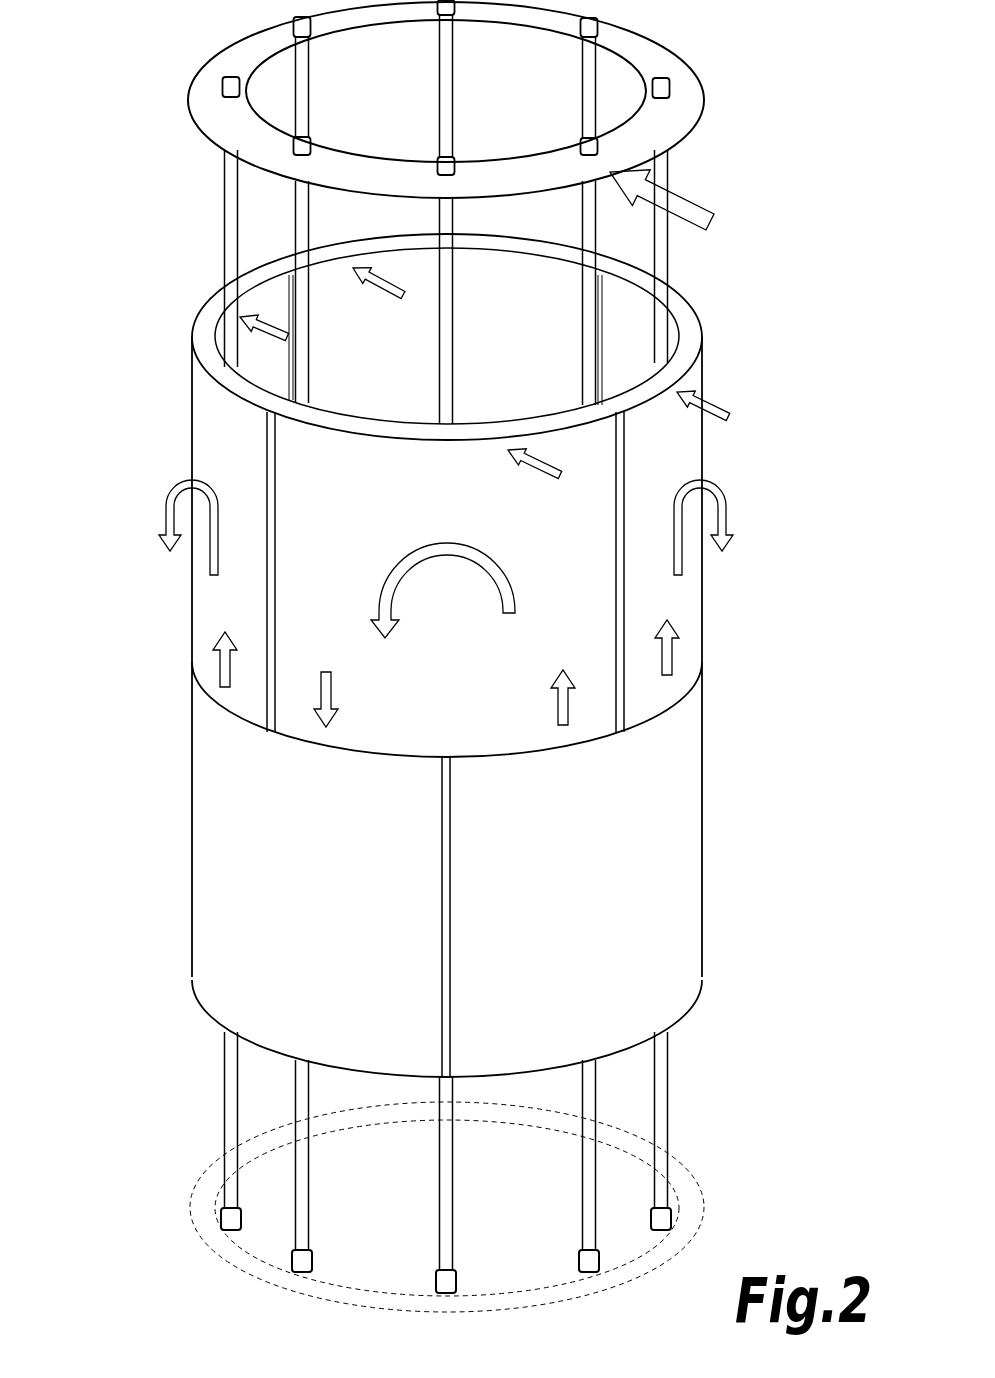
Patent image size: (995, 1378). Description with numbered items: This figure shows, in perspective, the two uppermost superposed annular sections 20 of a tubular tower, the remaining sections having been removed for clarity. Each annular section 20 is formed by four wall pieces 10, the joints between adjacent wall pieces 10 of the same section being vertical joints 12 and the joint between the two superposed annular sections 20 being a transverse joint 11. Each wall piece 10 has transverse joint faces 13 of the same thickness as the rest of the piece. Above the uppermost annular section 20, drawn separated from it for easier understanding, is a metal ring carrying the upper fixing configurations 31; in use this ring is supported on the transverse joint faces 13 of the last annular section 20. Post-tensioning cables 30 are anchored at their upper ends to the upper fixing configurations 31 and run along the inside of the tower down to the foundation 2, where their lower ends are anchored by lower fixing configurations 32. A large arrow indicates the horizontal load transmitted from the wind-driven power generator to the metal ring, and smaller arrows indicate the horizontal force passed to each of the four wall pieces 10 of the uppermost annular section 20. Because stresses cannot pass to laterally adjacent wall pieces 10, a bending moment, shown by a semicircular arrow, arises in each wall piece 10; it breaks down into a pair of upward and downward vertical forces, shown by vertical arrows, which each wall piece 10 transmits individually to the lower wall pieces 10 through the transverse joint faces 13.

The foundation 2 is at (447, 1207).
The wall piece 10 is at (446, 507).
The transverse joint 11 is at (233, 710).
The vertical joint 12 is at (275, 557).
The transverse joint face 13 is at (203, 337).
The annular section 20 is at (160, 579).
The post-tensioning cable 30 is at (228, 198).
The upper fixing configuration 31 is at (226, 86).
The lower fixing configuration 32 is at (227, 1212).